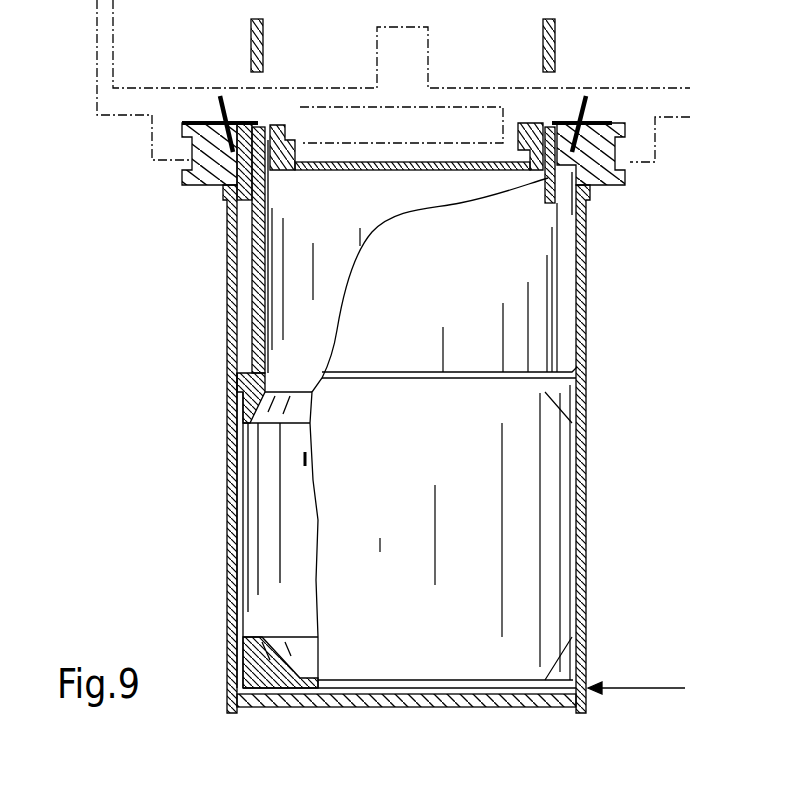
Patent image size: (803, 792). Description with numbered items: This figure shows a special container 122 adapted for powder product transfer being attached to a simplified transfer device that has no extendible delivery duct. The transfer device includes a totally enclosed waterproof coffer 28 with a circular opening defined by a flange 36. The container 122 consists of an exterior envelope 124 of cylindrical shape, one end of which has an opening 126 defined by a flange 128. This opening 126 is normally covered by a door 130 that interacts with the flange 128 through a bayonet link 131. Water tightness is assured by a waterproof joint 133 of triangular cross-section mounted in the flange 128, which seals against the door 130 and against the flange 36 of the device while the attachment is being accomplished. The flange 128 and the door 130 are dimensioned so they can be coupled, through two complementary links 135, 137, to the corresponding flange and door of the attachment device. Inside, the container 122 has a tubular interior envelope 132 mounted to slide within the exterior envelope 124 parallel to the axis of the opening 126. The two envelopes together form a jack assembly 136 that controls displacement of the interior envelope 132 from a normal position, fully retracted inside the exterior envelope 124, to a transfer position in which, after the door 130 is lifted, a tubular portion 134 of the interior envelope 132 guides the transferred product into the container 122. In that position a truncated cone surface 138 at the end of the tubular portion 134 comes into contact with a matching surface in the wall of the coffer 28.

The waterproof coffer 28 is at (673, 110).
The flange 36 is at (613, 103).
The container 122 is at (586, 349).
The exterior envelope 124 is at (223, 347).
The opening 126 is at (563, 172).
The flange 128 is at (203, 148).
The door 130 is at (415, 168).
The bayonet link 131 is at (253, 165).
The interior envelope 132 is at (243, 537).
The waterproof joint 133 is at (214, 124).
The tubular portion 134 is at (267, 318).
The complementary link 135 is at (627, 127).
The jack assembly 136 is at (228, 689).
The complementary link 137 is at (522, 123).
The truncated cone surface 138 is at (548, 123).